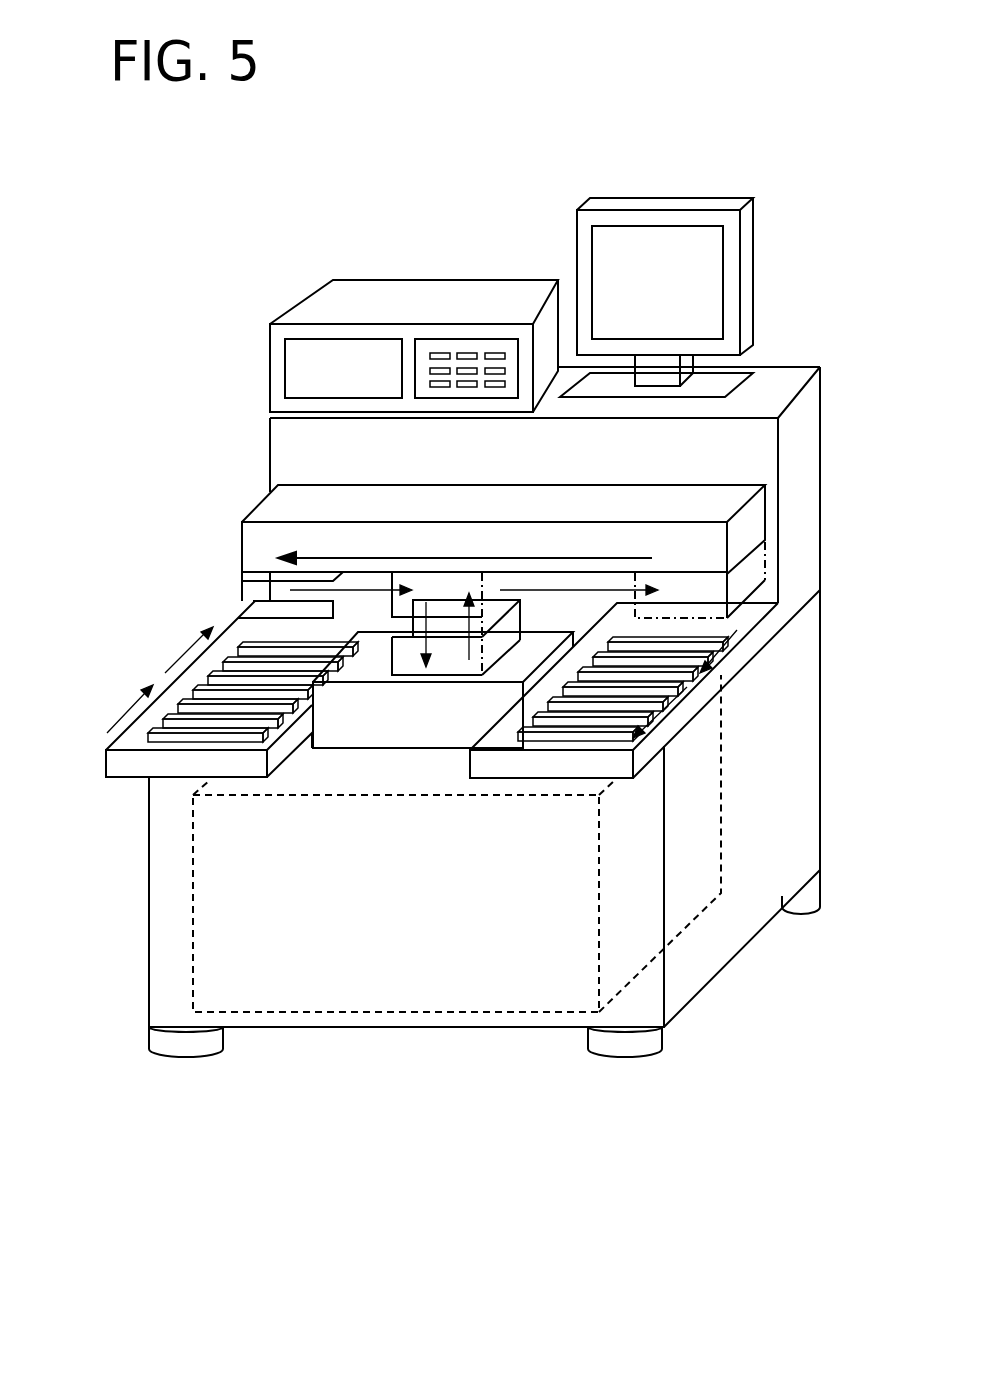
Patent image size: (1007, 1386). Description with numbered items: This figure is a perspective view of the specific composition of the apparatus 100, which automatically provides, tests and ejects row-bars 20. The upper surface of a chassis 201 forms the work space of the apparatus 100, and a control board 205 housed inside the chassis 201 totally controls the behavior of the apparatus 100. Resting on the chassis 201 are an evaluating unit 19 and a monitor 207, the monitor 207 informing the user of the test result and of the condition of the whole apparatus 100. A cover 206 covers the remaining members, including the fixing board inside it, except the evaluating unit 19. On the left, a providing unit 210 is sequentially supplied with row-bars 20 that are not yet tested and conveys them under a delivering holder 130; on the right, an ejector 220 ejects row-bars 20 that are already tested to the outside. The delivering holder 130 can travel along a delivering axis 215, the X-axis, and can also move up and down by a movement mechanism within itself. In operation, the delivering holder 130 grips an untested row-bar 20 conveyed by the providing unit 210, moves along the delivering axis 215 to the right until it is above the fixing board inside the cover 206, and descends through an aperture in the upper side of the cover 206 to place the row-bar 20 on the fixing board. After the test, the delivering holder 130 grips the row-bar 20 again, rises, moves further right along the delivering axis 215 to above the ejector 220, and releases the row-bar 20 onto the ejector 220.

The apparatus 100 is at (435, 675).
The evaluating unit 19 is at (389, 292).
The monitor 207 is at (685, 205).
The delivering axis 215 is at (280, 505).
The delivering holder 130 is at (240, 588).
The row-bar 20 is at (606, 1077).
The providing unit 210 is at (137, 763).
The ejector 220 is at (615, 757).
The control board 205 is at (305, 1013).
The cover 206 is at (415, 720).
The chassis 201 is at (245, 1027).